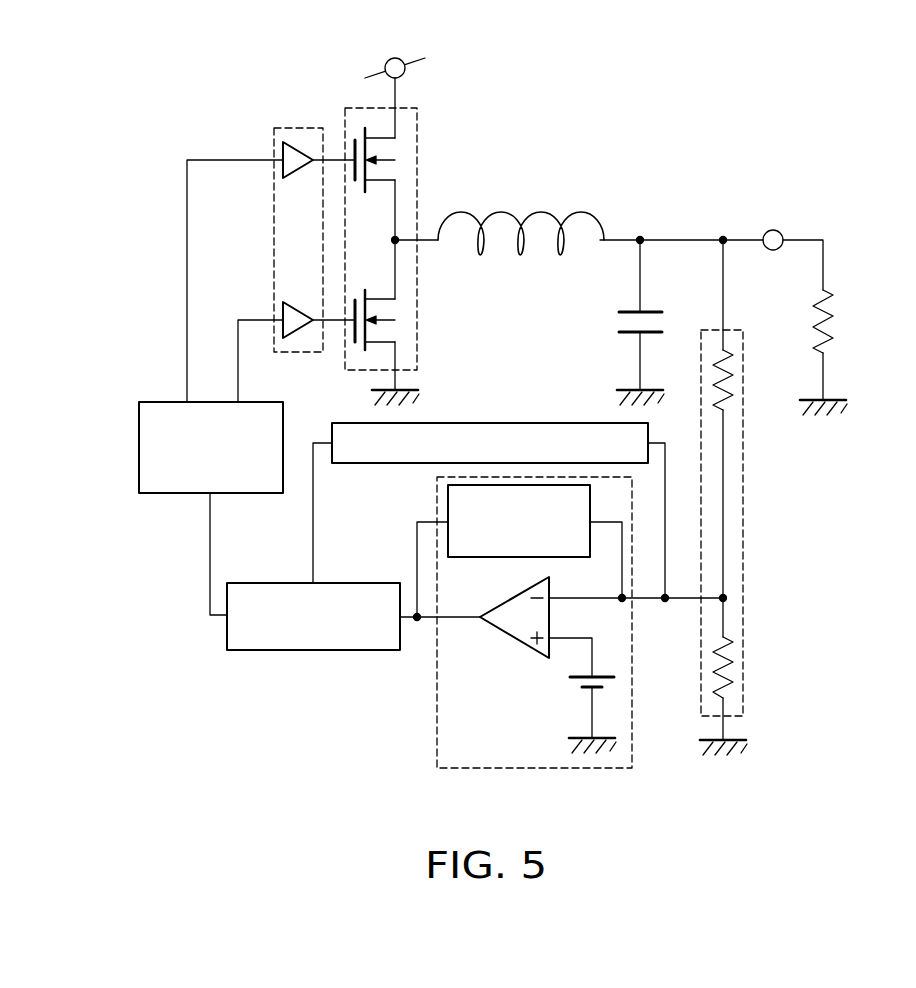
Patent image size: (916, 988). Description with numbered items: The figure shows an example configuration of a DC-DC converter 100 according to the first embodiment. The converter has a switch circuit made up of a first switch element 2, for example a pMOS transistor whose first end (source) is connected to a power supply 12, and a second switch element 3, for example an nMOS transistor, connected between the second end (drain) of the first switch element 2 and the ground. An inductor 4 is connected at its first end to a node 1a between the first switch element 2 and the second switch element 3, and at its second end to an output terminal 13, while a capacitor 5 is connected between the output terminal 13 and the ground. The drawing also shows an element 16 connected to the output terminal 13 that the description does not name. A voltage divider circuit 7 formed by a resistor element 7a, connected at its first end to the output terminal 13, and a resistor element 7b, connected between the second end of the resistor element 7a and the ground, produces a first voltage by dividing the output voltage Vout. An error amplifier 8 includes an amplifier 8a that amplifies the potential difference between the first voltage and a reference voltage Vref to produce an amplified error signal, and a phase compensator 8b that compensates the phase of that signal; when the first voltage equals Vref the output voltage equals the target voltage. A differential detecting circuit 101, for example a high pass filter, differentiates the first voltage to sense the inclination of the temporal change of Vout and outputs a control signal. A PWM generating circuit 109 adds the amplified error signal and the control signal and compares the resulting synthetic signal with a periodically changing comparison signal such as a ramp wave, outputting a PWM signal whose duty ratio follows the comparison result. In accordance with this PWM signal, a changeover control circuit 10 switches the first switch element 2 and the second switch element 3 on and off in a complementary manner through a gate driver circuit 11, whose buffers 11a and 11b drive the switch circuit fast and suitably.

The DC-DC converter 100 is at (510, 822).
The power supply 12 is at (386, 61).
The gate driver circuit 11 is at (273, 146).
The buffer 11a is at (297, 139).
The buffer 11b is at (297, 301).
The first switch element 2 is at (397, 160).
The second switch element 3 is at (397, 321).
The node 1a is at (398, 237).
The inductor 4 is at (537, 212).
The capacitor 5 is at (619, 312).
The output terminal 13 is at (784, 233).
The load resistor 16 is at (833, 312).
The voltage divider circuit 7 is at (746, 572).
The resistor element 7a is at (732, 372).
The resistor element 7b is at (732, 660).
The differential detecting circuit 101 is at (479, 422).
The changeover control circuit 10 is at (138, 450).
The PWM generating circuit 109 is at (313, 651).
The error amplifier 8 is at (436, 704).
The amplifier 8a is at (496, 628).
The phase compensator 8b is at (470, 558).